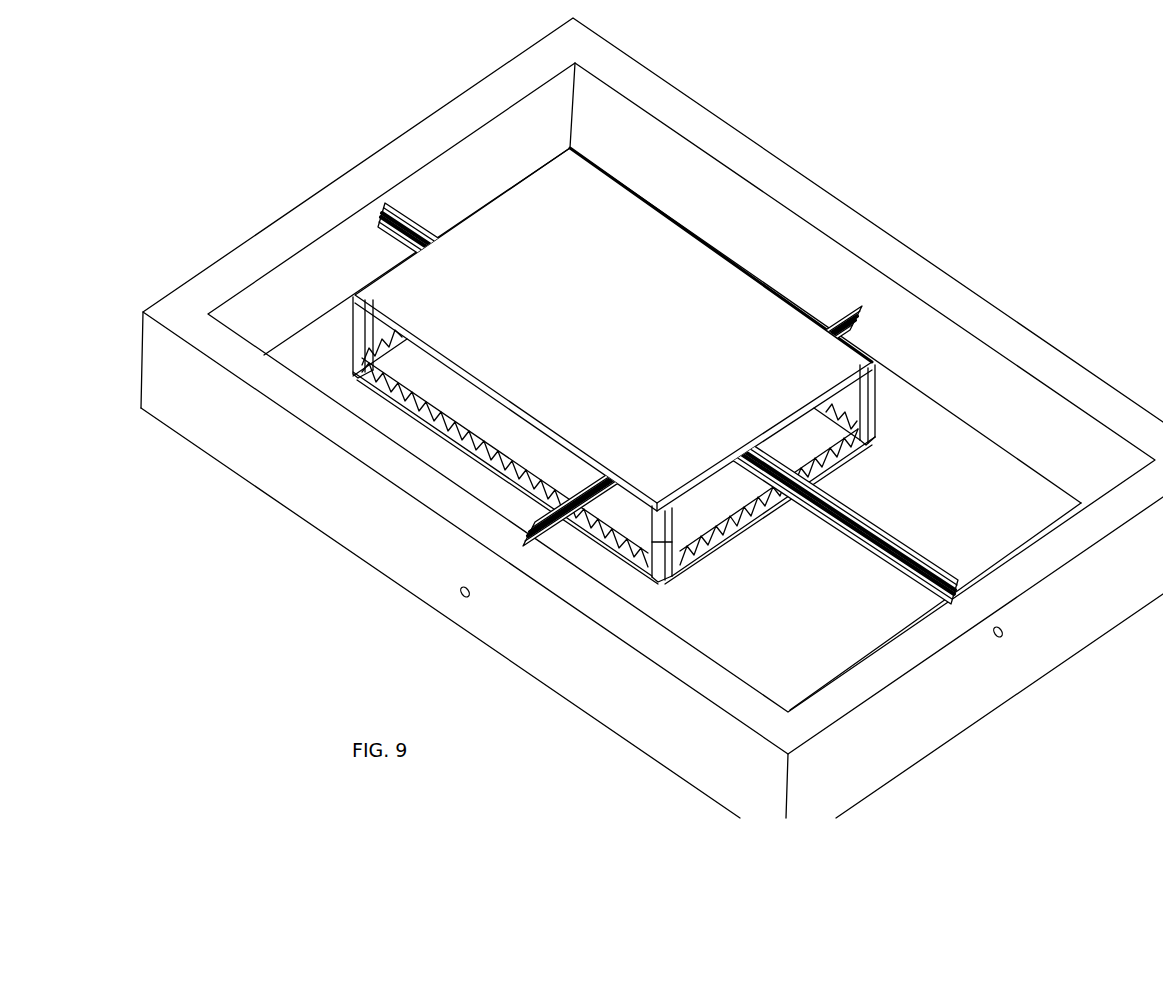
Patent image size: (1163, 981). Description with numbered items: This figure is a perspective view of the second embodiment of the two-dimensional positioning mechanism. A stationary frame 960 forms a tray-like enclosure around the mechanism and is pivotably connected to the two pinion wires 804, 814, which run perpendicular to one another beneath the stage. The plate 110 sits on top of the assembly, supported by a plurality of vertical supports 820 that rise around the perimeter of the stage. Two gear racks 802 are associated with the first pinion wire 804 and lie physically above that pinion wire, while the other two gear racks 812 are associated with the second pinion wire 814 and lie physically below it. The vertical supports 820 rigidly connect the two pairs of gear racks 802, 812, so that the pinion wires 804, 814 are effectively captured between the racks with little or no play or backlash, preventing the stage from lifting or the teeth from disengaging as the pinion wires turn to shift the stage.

The stationary frame 960 is at (745, 163).
The plate / substrate 110 is at (603, 348).
The vertical supports 820 is at (355, 338).
The gear racks 812 is at (380, 388).
The second pinion wire 814 is at (570, 541).
The gear racks 802 is at (797, 435).
The first pinion wire 804 is at (812, 530).